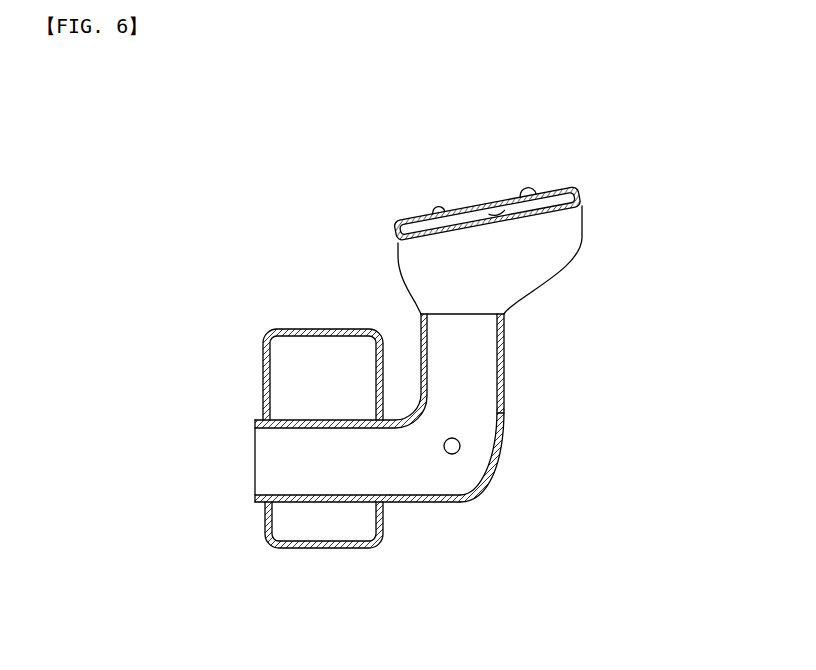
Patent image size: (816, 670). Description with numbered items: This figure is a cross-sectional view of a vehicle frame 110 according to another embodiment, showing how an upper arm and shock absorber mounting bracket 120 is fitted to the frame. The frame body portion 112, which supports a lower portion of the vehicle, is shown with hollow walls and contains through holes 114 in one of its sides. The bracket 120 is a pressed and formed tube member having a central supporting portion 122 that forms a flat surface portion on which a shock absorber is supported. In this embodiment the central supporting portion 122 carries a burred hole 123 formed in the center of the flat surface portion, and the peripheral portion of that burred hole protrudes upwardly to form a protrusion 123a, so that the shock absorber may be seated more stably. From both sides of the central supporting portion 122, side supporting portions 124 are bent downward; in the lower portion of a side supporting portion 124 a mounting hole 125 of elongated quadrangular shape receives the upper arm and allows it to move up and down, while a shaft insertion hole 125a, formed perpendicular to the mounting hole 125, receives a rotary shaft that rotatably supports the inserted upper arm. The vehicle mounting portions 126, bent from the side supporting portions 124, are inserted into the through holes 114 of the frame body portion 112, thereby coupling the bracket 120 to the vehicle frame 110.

The vehicle frame 110 is at (297, 316).
The frame body portion 112 is at (273, 546).
The through holes 114 is at (390, 503).
The upper arm and shock absorber mounting bracket 120 is at (598, 184).
The central supporting portion 122 is at (466, 155).
The burred hole 123 is at (497, 211).
The protrusion 123a is at (440, 209).
The side supporting portions 124 is at (503, 373).
The mounting holes 125 is at (499, 443).
The shaft insertion holes 125a is at (452, 454).
The vehicle mounting portions 126 is at (410, 504).